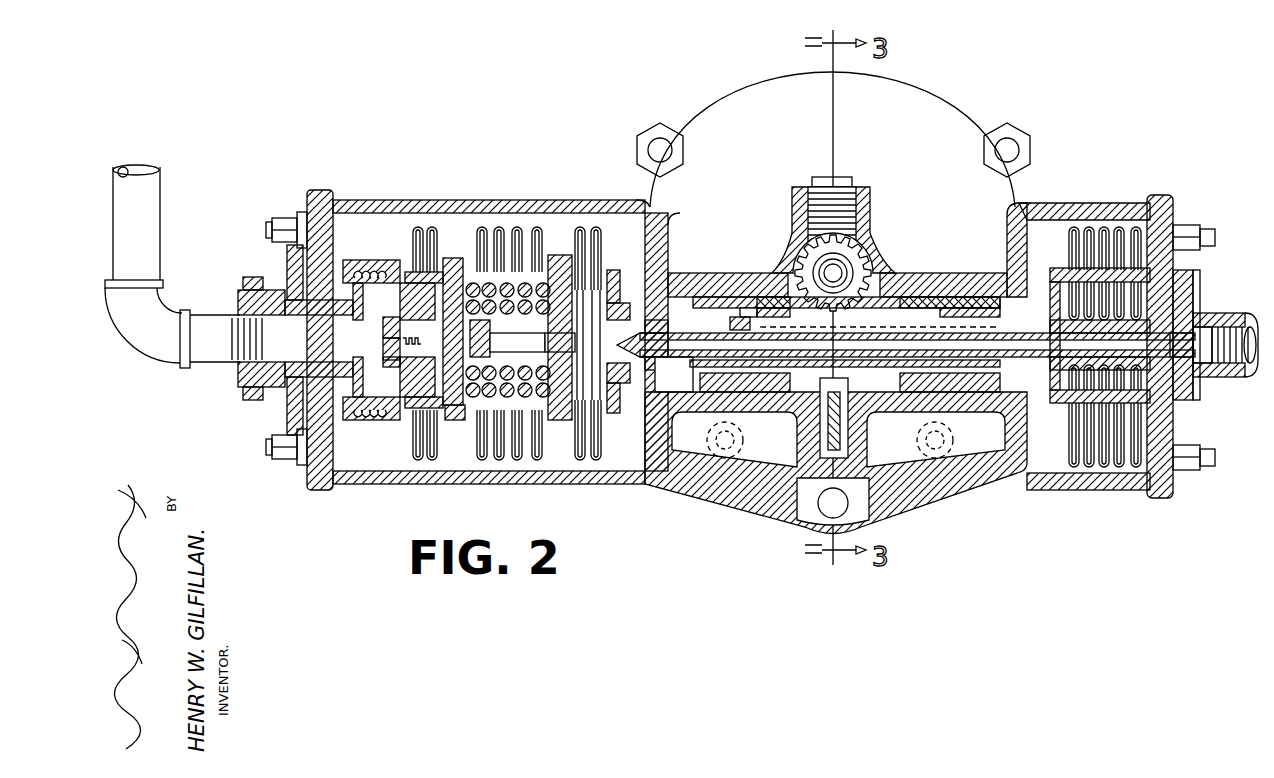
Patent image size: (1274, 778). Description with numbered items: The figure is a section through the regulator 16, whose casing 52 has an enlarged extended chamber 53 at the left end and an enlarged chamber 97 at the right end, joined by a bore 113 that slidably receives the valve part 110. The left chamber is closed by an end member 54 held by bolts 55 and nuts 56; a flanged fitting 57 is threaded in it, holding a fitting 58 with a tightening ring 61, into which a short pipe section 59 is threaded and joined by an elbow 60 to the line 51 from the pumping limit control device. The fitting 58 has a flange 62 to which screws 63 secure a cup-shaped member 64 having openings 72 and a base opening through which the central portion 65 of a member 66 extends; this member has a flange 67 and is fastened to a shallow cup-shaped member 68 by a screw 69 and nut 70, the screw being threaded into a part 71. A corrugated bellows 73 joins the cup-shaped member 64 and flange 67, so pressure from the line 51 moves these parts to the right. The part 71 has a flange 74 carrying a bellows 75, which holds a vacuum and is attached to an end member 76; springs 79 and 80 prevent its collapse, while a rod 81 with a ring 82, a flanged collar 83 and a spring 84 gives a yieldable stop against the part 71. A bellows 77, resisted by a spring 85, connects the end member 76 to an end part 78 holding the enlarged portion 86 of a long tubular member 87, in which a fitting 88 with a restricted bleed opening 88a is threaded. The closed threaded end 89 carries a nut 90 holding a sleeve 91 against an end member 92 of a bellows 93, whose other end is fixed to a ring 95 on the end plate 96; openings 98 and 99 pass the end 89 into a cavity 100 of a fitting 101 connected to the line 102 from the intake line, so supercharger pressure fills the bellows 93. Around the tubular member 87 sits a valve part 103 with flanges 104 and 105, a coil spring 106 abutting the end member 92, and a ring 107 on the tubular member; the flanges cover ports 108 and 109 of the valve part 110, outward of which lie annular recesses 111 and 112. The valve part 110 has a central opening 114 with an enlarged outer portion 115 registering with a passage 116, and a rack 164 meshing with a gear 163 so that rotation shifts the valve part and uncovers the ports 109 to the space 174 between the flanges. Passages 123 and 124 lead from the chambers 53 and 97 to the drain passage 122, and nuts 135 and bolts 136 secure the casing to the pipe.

The regulator 16 is at (936, 97).
The line 51 is at (133, 205).
The casing 52 is at (768, 108).
The enlarged extended chamber 53 is at (365, 222).
The end member 54 is at (307, 195).
The bolts 55 is at (270, 233).
The nuts 56 is at (296, 218).
The flanged fitting 57 is at (298, 298).
The fitting 58 is at (246, 305).
The short pipe section 59 is at (218, 330).
The elbow 60 is at (150, 318).
The tightening ring 61 is at (258, 278).
The outwardly extending flange 62 is at (346, 268).
The screws 63 is at (348, 420).
The cup-shaped member 64 is at (418, 258).
The central portion 65 is at (410, 386).
The member 66 is at (420, 370).
The outwardly extending flange 67 is at (468, 420).
The shallow cup-shaped member 68 is at (470, 318).
The screw 69 is at (400, 348).
The nut 70 is at (395, 322).
The part 71 is at (414, 410).
The openings 72 is at (420, 296).
The corrugated bellows 73 is at (442, 478).
The flange 74 is at (466, 265).
The bellows 75 is at (518, 475).
The end member 76 is at (566, 255).
The bellows 77 is at (576, 468).
The end part 78 is at (612, 278).
The spring 79 is at (480, 250).
The spring 80 is at (490, 290).
The rod 81 is at (541, 345).
The ring 82 is at (500, 345).
The flanged collar 83 is at (508, 345).
The spring 84 is at (525, 265).
The spring 85 is at (610, 392).
The enlarged portion 86 is at (612, 368).
The tubular member 87 is at (652, 360).
The fitting 88 is at (610, 312).
The restricted bleed opening 88a is at (648, 333).
The closed threaded end 89 is at (1186, 355).
The nut 90 is at (917, 345).
The sleeve 91 is at (1060, 378).
The end member 92 is at (1058, 400).
The bellows 93 is at (1066, 457).
The ring 95 is at (1142, 490).
The end plate 96 is at (1172, 215).
The enlarged chamber 97 is at (1055, 442).
The opening 98 is at (1190, 280).
The opening 99 is at (1196, 296).
The cavity 100 is at (1185, 312).
The fitting 101 is at (1195, 388).
The line 102 is at (1190, 403).
The valve part 103 is at (910, 300).
The enlarged flange 104 is at (752, 290).
The enlarged flange 105 is at (955, 290).
The coil spring 106 is at (1000, 427).
The ring 107 is at (730, 322).
The ports 108 is at (735, 288).
The ports 109 is at (950, 295).
The valve part 110 is at (903, 290).
The annular recess 111 is at (760, 290).
The annular recess 112 is at (960, 300).
The bore 113 is at (670, 268).
The opening 114 is at (850, 427).
The enlarged outer portion 115 is at (800, 440).
The passage 116 is at (820, 440).
The passage 122 is at (855, 520).
The passage 123 is at (708, 503).
The passage 124 is at (925, 505).
The nuts 135 is at (647, 142).
The bolts 136 is at (660, 146).
The gear 163 is at (868, 235).
The rack 164 is at (893, 270).
The space 174 is at (775, 390).